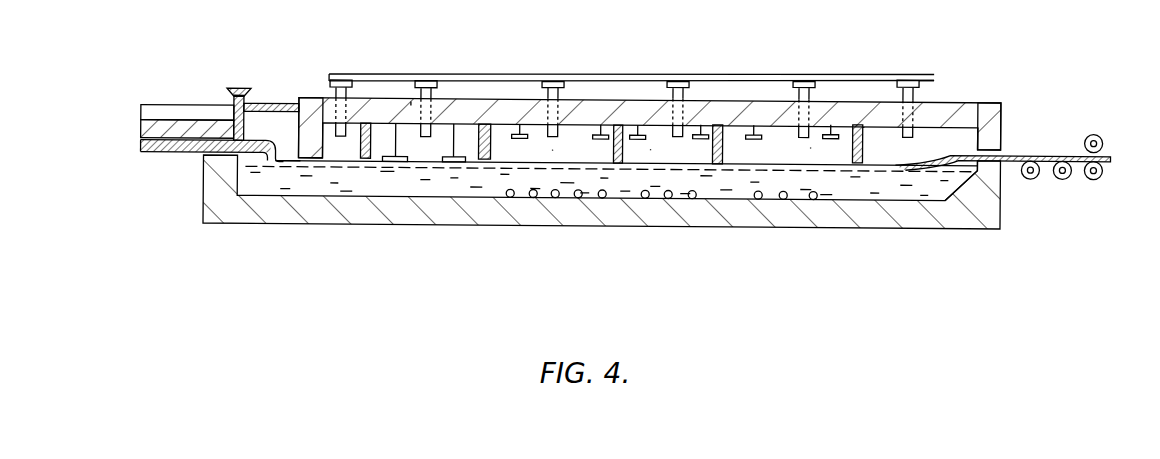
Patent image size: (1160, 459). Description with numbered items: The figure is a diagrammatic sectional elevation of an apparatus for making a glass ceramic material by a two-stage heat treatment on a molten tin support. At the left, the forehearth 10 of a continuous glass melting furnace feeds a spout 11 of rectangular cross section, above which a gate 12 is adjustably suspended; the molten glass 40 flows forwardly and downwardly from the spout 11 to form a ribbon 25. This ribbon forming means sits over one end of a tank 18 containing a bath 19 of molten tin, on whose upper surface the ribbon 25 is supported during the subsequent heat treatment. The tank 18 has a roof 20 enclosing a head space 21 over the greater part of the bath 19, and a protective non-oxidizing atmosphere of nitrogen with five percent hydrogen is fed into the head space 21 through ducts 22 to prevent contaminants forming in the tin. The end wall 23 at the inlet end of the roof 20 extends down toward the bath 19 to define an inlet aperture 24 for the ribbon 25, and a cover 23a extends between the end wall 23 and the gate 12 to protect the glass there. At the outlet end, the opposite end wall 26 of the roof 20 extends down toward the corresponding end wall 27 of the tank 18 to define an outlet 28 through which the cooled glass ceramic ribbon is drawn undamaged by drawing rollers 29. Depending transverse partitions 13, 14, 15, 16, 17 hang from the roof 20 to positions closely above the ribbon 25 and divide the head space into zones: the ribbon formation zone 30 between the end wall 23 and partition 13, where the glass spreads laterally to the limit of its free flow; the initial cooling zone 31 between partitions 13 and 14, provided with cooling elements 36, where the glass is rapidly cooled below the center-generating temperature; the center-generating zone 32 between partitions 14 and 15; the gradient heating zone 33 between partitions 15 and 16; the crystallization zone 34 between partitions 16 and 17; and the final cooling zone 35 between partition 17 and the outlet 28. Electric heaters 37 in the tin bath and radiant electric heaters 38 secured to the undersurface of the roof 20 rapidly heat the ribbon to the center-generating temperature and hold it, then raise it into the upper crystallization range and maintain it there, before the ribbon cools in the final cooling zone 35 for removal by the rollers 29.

The forehearth 10 is at (175, 105).
The spout 11 is at (185, 148).
The gate 12 is at (230, 92).
The transverse partition 13 is at (365, 157).
The transverse partition 14 is at (483, 157).
The transverse partition 15 is at (617, 160).
The transverse partition 16 is at (718, 160).
The transverse partition 17 is at (865, 152).
The tank 18 is at (900, 208).
The bath of molten metal 19 is at (255, 185).
The roof 20 is at (306, 96).
The head space 21 is at (505, 105).
The ducts 22 is at (347, 97).
The end wall 23 is at (317, 110).
The cover 23a is at (270, 104).
The inlet aperture 24 is at (310, 160).
The ribbon 25 is at (277, 163).
The end wall 26 is at (988, 134).
The end wall 27 is at (987, 162).
The outlet 28 is at (1003, 146).
The drawing rollers 29 is at (1097, 127).
The ribbon formation zone 30 is at (342, 150).
The initial cooling zone 31 is at (412, 100).
The center-generating zone 32 is at (552, 147).
The gradient heating zone 33 is at (650, 146).
The crystallization zone 34 is at (810, 143).
The final cooling zone 35 is at (933, 135).
The cooling elements 36 is at (435, 160).
The electric heaters 37 is at (533, 195).
The radiant electric heaters 38 is at (528, 105).
The molten glass 40 is at (145, 130).